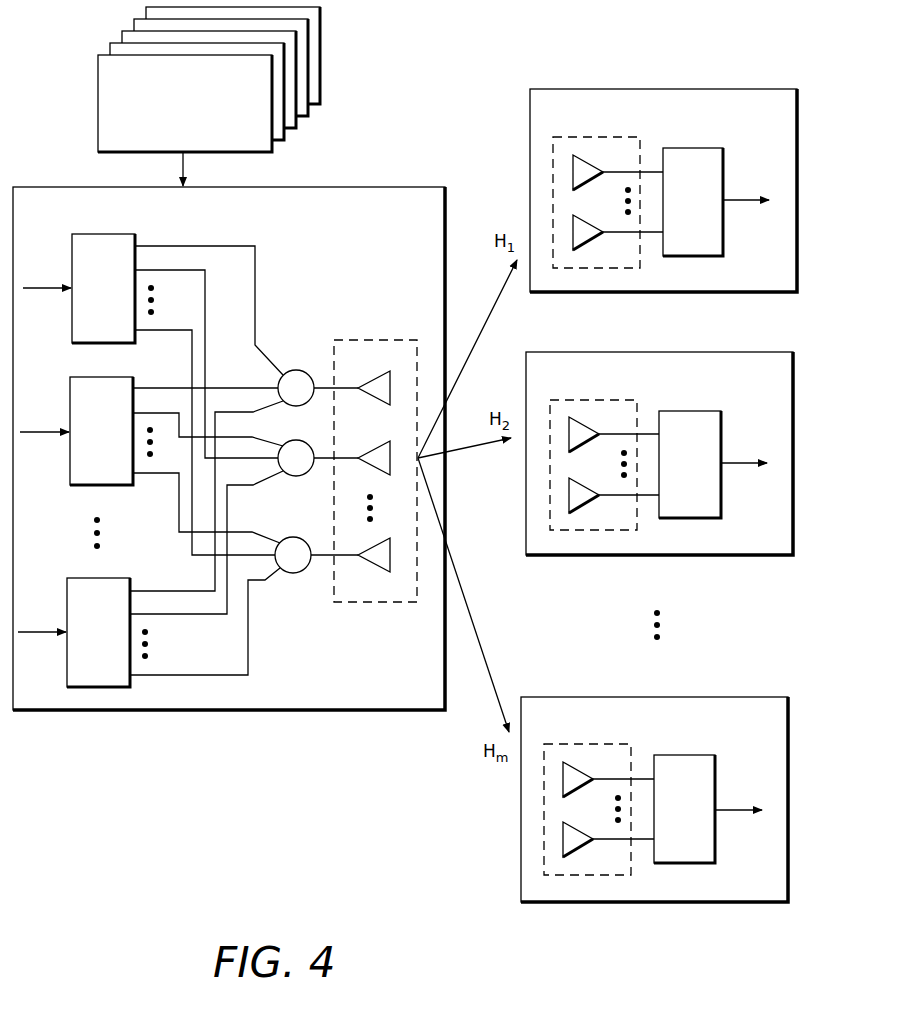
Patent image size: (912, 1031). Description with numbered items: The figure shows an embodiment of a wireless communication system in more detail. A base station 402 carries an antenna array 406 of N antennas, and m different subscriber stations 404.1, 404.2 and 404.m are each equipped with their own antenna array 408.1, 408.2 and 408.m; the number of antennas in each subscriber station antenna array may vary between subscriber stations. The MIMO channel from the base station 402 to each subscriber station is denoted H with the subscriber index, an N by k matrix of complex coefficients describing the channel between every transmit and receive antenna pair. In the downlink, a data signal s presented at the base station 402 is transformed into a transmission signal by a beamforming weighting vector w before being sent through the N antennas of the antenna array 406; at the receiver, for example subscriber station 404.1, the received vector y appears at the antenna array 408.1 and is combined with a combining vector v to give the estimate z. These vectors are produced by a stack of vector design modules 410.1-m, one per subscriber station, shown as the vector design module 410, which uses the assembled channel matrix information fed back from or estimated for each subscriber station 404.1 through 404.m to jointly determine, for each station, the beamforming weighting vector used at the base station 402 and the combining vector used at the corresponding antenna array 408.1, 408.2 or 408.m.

The vector design modules 410.1-m is at (185, 79).
The vector design module 410 is at (249, 139).
The base station 402 is at (393, 186).
The antenna array 406 is at (377, 339).
The subscriber station 404.1 is at (663, 171).
The subscriber station 404.2 is at (659, 434).
The subscriber station 404.m is at (654, 781).
The antenna array 408.1 is at (621, 136).
The antenna array 408.2 is at (612, 400).
The antenna array 408.m is at (610, 745).